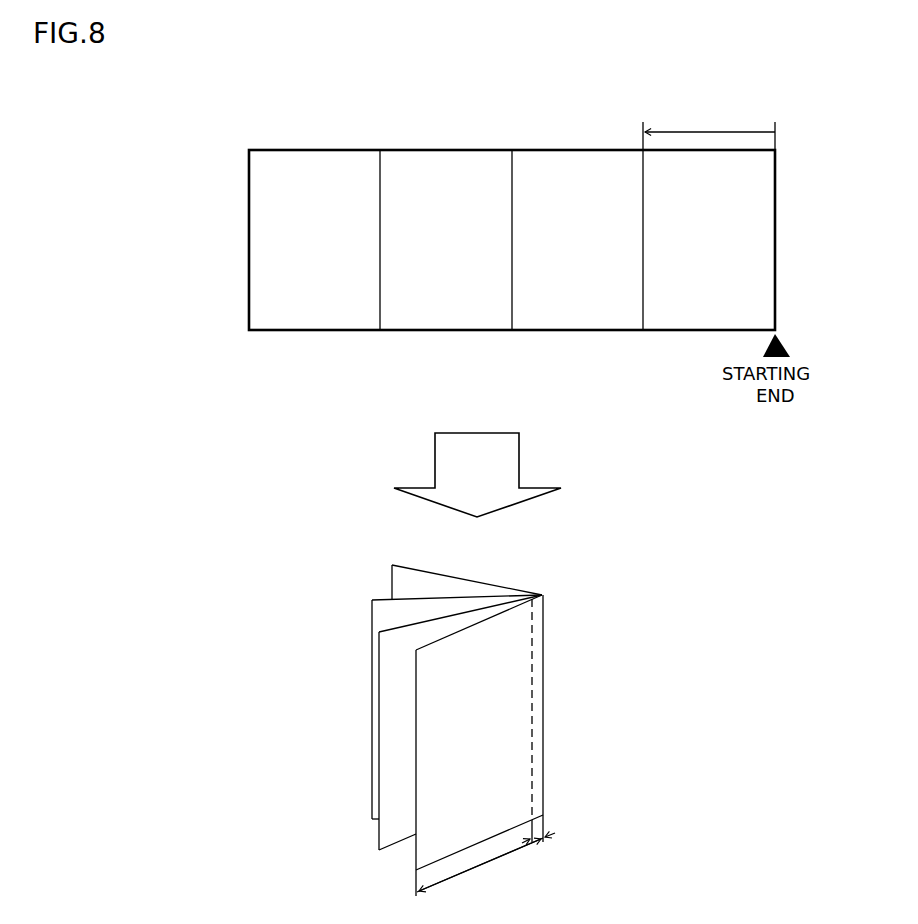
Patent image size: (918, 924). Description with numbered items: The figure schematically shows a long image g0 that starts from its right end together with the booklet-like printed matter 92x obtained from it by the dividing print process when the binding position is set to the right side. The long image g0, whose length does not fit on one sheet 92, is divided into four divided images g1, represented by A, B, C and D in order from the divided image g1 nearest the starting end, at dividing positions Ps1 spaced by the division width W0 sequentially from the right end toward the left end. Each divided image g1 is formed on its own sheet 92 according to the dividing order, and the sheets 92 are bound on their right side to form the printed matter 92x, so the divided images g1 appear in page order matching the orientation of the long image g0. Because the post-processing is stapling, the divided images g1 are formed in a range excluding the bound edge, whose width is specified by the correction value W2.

The long image g0 is at (243, 152).
The divided image g1 is at (404, 320).
The dividing position Ps1 is at (512, 333).
The division width W0 is at (595, 500).
The correction value W2 is at (545, 845).
The sheet 92 is at (499, 613).
The printed matter 92x is at (346, 559).